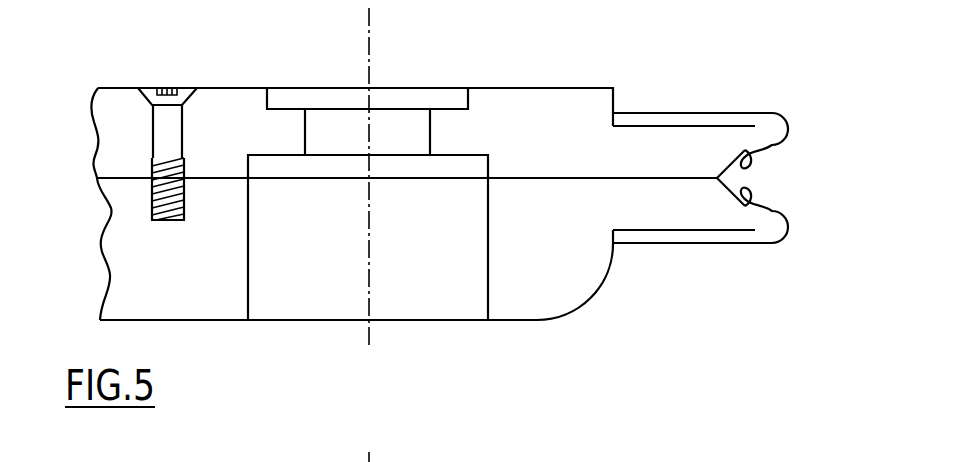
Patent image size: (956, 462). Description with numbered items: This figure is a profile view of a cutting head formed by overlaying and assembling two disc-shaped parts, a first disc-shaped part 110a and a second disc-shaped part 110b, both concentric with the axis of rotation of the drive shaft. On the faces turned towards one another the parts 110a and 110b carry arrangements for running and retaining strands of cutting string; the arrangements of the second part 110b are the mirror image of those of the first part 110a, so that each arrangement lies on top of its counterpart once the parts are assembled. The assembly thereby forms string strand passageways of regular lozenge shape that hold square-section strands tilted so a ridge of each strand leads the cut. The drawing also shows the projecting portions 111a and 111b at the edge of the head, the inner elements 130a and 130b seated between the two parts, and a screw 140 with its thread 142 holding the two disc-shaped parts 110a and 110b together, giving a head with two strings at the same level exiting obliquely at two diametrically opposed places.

The first disc-shaped part 110a is at (537, 126).
The second disc-shaped part 110b is at (533, 266).
The upper contact prong 111a is at (755, 155).
The lower contact prong 111b is at (737, 210).
The upper insert block 130a is at (342, 136).
The lower insert block 130b is at (314, 255).
The screw 140 is at (164, 137).
The screw thread 142 is at (177, 198).